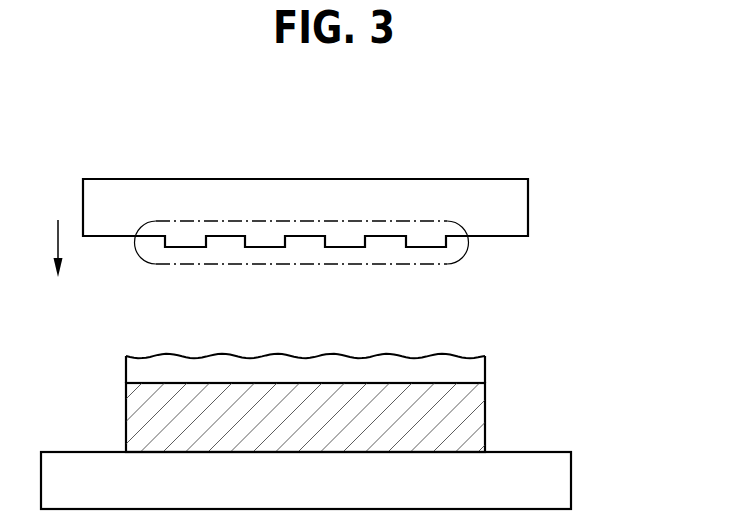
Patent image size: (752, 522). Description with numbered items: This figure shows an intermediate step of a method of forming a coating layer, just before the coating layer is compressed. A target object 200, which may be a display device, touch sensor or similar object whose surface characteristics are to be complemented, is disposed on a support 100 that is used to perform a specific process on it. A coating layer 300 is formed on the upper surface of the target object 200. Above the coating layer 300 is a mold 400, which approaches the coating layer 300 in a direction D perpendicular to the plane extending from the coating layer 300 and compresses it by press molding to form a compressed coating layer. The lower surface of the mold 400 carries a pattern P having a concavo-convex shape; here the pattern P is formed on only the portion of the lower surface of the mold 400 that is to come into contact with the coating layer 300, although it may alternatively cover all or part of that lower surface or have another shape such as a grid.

The support 100 is at (563, 481).
The target object 200 is at (478, 418).
The coating layer 300 is at (478, 371).
The mold 400 is at (521, 208).
The pattern P is at (306, 221).
The direction D is at (49, 248).